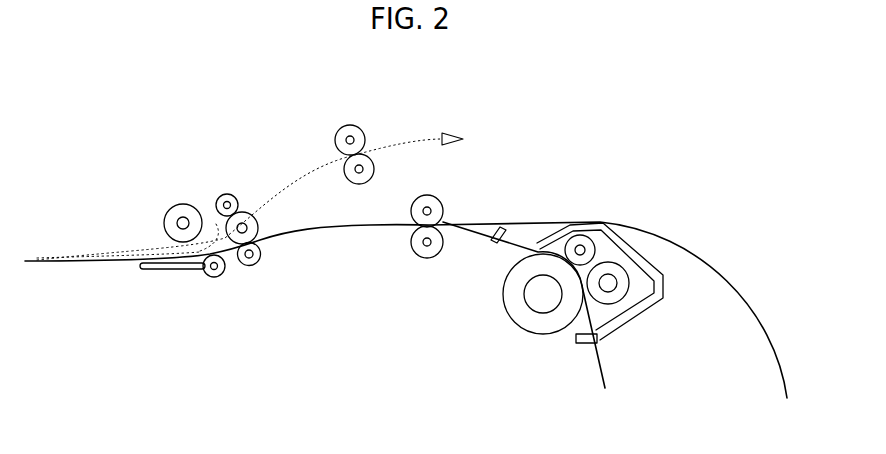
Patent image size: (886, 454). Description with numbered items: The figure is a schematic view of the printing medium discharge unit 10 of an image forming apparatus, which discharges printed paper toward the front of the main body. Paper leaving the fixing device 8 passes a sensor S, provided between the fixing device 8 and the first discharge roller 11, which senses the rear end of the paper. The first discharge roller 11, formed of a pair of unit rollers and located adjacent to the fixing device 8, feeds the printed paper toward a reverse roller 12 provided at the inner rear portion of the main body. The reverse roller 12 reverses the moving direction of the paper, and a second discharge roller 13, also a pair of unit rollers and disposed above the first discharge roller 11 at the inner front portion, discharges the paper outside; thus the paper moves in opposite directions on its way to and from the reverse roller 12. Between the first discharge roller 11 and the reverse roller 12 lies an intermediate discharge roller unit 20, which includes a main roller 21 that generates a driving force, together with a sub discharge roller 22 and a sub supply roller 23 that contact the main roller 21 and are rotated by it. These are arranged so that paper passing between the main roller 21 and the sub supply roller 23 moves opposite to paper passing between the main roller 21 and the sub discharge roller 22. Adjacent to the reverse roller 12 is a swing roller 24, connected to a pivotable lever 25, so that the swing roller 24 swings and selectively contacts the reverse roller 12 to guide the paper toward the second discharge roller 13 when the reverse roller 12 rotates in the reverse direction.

The fixing device 8 is at (554, 356).
The printing medium discharge unit 10 is at (519, 152).
The first discharge roller 11 is at (436, 202).
The reverse roller 12 is at (181, 208).
The second discharge roller 13 is at (352, 126).
The intermediate discharge roller unit 20 is at (235, 282).
The main roller 21 is at (255, 224).
The sub discharge roller 22 is at (232, 196).
The sub supply roller 23 is at (257, 259).
The swing roller 24 is at (214, 277).
The lever 25 is at (168, 270).
The sensor S is at (500, 226).